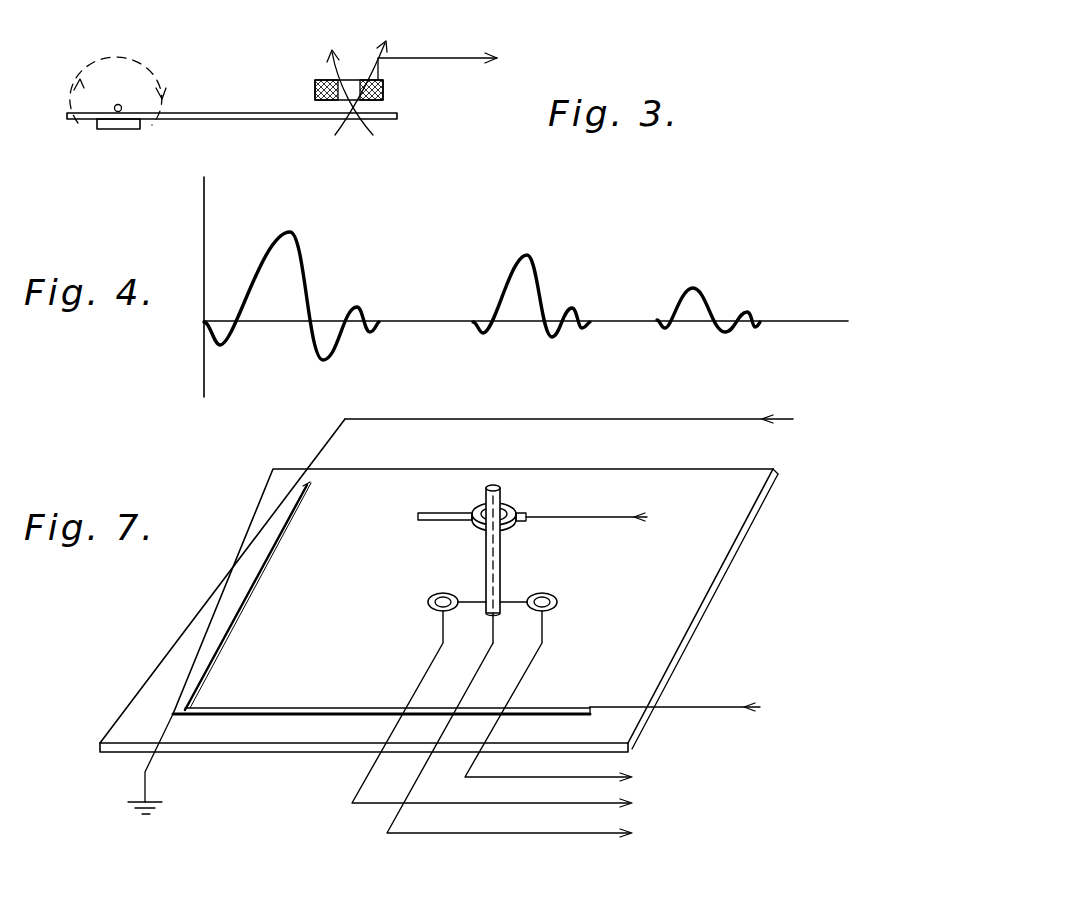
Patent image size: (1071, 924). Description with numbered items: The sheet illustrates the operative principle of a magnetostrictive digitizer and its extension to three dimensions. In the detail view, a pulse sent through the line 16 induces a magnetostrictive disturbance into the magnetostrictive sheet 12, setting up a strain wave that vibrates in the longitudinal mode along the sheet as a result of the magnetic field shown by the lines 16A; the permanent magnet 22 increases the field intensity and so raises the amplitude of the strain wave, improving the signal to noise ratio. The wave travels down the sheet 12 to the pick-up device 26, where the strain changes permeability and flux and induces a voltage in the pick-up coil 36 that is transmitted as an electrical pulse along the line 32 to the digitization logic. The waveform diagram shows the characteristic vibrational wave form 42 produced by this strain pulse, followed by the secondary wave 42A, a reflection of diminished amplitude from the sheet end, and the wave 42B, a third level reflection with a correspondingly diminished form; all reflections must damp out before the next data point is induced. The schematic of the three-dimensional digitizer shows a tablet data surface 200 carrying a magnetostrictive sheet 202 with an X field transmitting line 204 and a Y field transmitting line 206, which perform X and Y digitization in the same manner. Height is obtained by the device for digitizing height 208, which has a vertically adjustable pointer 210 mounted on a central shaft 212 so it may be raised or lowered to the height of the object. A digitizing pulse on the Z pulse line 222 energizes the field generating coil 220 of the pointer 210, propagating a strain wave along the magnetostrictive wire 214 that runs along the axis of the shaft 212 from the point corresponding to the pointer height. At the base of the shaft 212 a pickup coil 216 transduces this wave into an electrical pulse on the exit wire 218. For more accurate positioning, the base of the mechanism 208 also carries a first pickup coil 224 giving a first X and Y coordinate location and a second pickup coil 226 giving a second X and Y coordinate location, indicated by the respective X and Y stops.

In FIG. 3, the magnetostrictive sheet 12 is at (222, 120).
In FIG. 3, the line 16 is at (118, 104).
In FIG. 3, the magnetic field lines 16A is at (140, 68).
In FIG. 3, the permanent magnet 22 is at (120, 130).
In FIG. 3, the pick-up device 26 is at (395, 90).
In FIG. 3, the line 32 is at (458, 60).
In FIG. 3, the pick-up coil 36 is at (315, 90).
In FIG. 4, the vibrational wave form 42 is at (303, 240).
In FIG. 4, the secondary wave 42A is at (530, 256).
In FIG. 4, the third level reflection wave 42B is at (695, 288).
In FIG. 7, the tablet data surface 200 is at (140, 663).
In FIG. 7, the magnetostrictive sheet 202 is at (368, 479).
In FIG. 7, the X field transmitting line 204 is at (287, 518).
In FIG. 7, the Y field transmitting line 206 is at (287, 708).
In FIG. 7, the device for digitizing height 208 is at (467, 543).
In FIG. 7, the vertically adjustable pointer 210 is at (511, 503).
In FIG. 7, the central shaft 212 is at (491, 485).
In FIG. 7, the magnetostrictive wire 214 is at (497, 566).
In FIG. 7, the pickup coil 216 is at (485, 610).
In FIG. 7, the exit wire 218 is at (387, 833).
In FIG. 7, the field generating coil 220 is at (480, 510).
In FIG. 7, the Z pulse line 222 is at (608, 512).
In FIG. 7, the first pickup coil 224 is at (427, 608).
In FIG. 7, the second pickup coil 226 is at (557, 602).